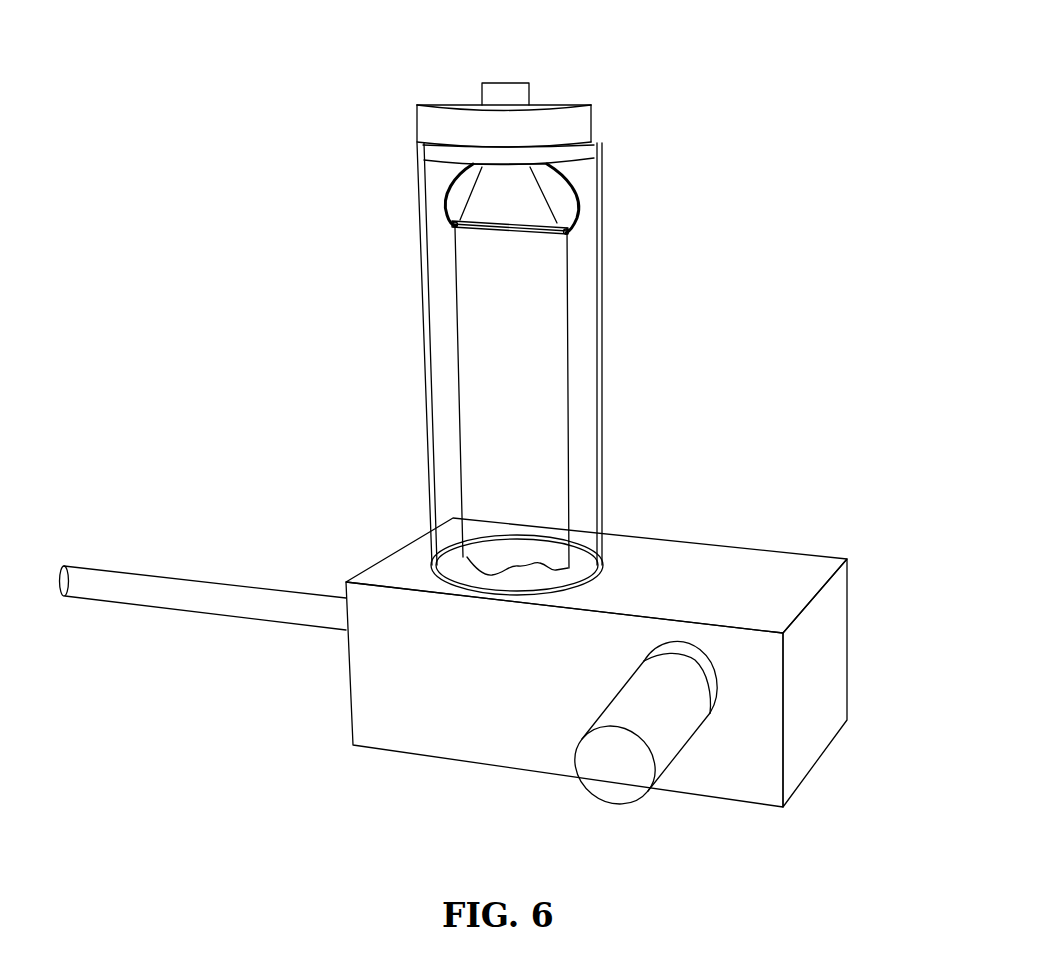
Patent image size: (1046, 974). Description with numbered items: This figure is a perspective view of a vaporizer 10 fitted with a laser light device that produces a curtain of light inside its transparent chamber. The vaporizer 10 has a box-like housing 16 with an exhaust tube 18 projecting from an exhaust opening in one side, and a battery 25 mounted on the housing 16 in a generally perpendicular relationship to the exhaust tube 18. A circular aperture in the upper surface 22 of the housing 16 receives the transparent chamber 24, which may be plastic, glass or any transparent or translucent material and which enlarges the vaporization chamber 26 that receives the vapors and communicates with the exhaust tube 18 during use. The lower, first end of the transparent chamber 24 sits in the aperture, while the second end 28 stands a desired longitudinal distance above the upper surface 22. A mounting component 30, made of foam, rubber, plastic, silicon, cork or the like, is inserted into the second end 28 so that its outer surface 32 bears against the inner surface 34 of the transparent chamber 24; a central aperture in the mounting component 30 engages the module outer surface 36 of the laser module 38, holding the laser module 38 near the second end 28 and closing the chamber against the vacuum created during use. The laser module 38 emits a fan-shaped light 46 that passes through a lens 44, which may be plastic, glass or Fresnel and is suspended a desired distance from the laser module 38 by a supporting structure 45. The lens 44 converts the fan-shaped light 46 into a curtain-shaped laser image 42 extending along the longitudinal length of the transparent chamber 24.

The vaporizer 10 is at (684, 561).
The housing 16 is at (842, 593).
The exhaust tube 18 is at (212, 605).
The upper surface 22 is at (775, 558).
The transparent chamber 24 is at (587, 303).
The battery 25 is at (612, 785).
The vaporization chamber 26 is at (589, 563).
The second end 28 is at (418, 142).
The mounting component 30 is at (557, 105).
The outer surface 32 is at (585, 127).
The inner surface 34 is at (593, 363).
The module outer surface 36 is at (495, 98).
The laser module 38 is at (505, 82).
The curtain-shaped laser image 42 is at (487, 483).
The lens 44 is at (565, 235).
The structure 45 is at (447, 195).
The fan-shaped light 46 is at (530, 210).